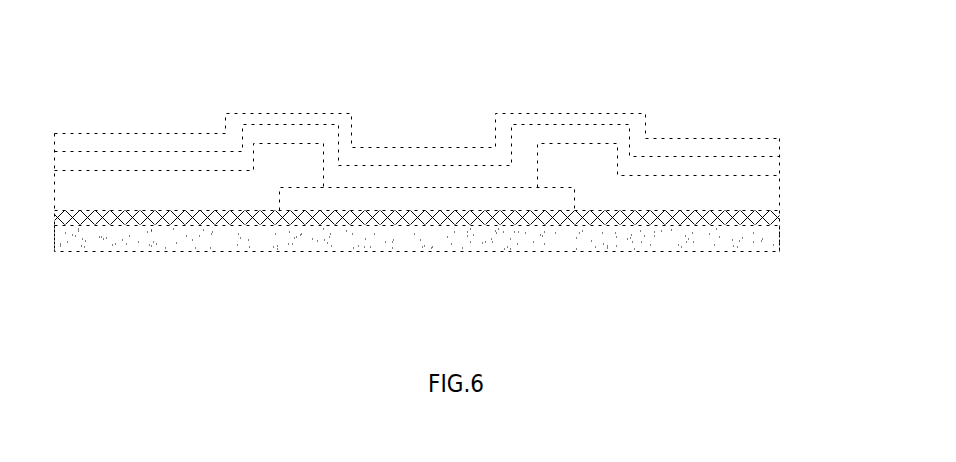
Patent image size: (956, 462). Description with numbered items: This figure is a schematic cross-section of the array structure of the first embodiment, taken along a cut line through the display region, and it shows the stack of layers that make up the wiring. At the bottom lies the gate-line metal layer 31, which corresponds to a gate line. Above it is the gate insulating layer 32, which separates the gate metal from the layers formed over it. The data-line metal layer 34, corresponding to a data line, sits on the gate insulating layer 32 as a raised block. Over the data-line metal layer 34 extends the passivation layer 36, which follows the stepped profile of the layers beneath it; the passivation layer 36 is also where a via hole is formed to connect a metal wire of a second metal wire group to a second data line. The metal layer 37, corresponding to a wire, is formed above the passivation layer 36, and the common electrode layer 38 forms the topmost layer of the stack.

The gate-line metal layer 31 is at (762, 240).
The gate insulating layer 32 is at (670, 218).
The data-line metal layer 34 is at (484, 197).
The passivation layer 36 is at (617, 201).
The metal layer 37 is at (578, 133).
The common electrode layer 38 is at (637, 132).